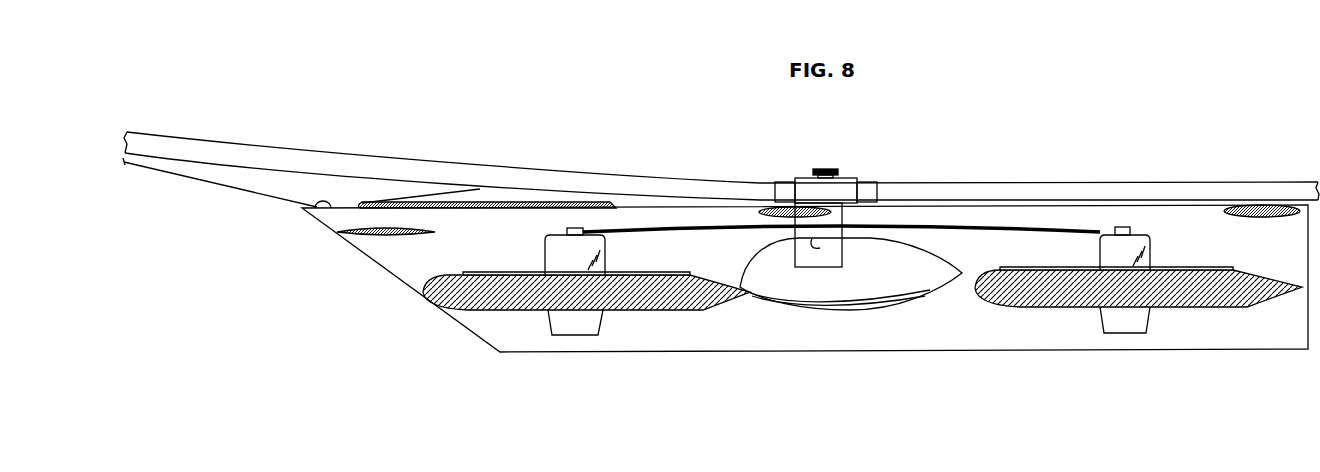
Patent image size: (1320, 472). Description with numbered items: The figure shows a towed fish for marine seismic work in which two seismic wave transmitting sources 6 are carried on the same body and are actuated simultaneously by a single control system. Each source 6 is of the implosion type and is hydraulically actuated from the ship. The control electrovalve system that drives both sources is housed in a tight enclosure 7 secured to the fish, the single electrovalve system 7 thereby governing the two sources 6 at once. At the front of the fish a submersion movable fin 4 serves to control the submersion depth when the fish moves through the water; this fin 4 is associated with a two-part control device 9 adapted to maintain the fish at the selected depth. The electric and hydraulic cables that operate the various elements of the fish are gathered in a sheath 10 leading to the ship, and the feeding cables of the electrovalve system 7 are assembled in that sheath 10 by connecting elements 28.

The submersion movable fin 4 is at (400, 237).
The source for seismic wave transmission 6 is at (622, 290).
The tight enclosure 7 is at (863, 282).
The control device 9 is at (465, 200).
The sheath 10 is at (688, 190).
The connecting elements 28 is at (845, 188).